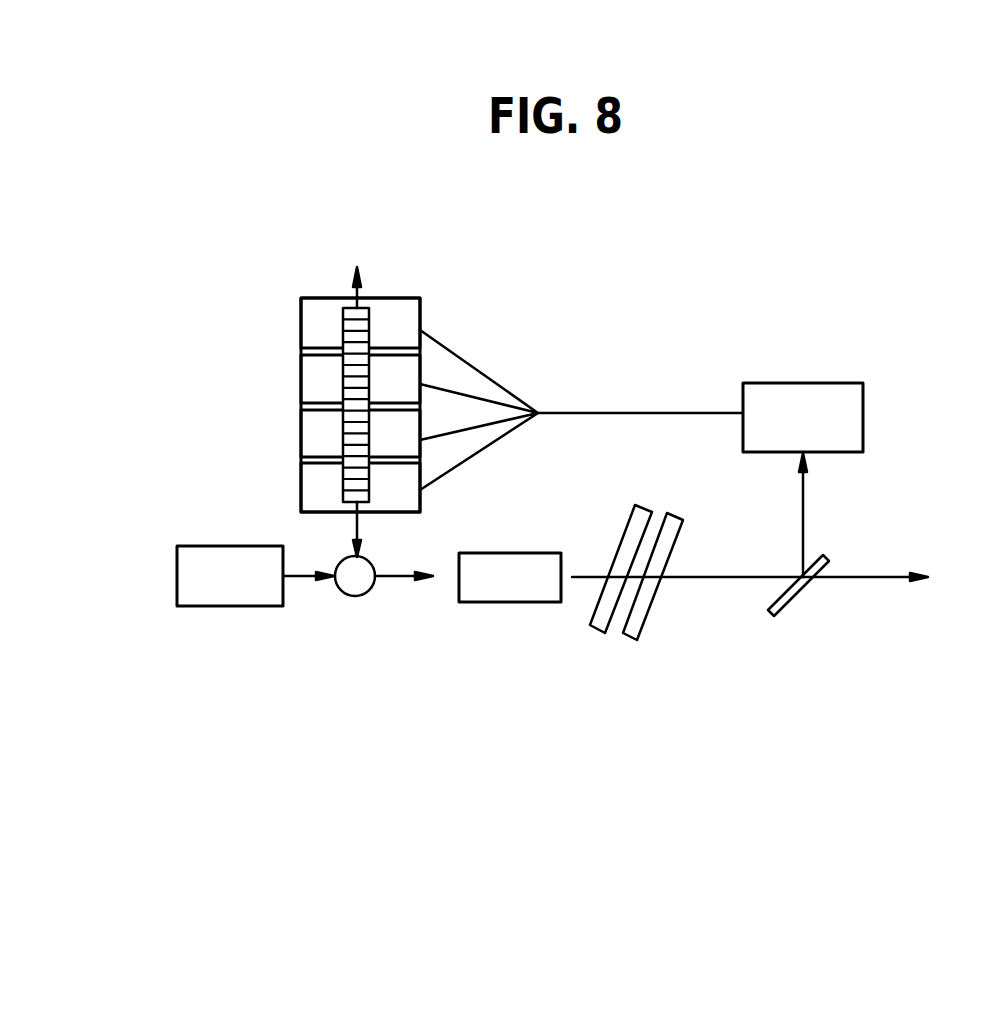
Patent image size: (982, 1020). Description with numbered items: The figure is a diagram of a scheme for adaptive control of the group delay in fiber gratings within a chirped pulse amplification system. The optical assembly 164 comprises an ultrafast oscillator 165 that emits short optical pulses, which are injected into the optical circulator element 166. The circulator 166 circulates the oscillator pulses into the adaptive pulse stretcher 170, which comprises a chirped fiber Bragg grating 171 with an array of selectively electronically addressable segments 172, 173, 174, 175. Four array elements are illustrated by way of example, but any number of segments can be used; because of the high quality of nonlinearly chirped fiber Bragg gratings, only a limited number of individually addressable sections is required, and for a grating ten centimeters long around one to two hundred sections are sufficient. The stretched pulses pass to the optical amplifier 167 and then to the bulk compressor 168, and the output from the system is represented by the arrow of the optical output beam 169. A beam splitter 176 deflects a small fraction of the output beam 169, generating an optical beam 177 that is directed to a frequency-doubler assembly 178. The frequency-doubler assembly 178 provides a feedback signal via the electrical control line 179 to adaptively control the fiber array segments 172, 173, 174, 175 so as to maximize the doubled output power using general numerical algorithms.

The optical assembly 164 is at (707, 315).
The ultrafast oscillator 165 is at (213, 606).
The optical circulator element 166 is at (352, 596).
The optical amplifier 167 is at (505, 602).
The bulk compressor 168 is at (595, 630).
The optical output beam 169 is at (890, 579).
The adaptive pulse stretcher 170 is at (278, 405).
The chirped fiber Bragg grating 171 is at (369, 335).
The selectively electronically addressable segment 172 is at (320, 324).
The selectively electronically addressable segment 173 is at (320, 390).
The selectively electronically addressable segment 174 is at (320, 445).
The selectively electronically addressable segment 175 is at (320, 500).
The beam splitter 176 is at (806, 593).
The optical beam 177 is at (803, 512).
The frequency-doubler assembly 178 is at (863, 423).
The electrical control line 179 is at (640, 413).